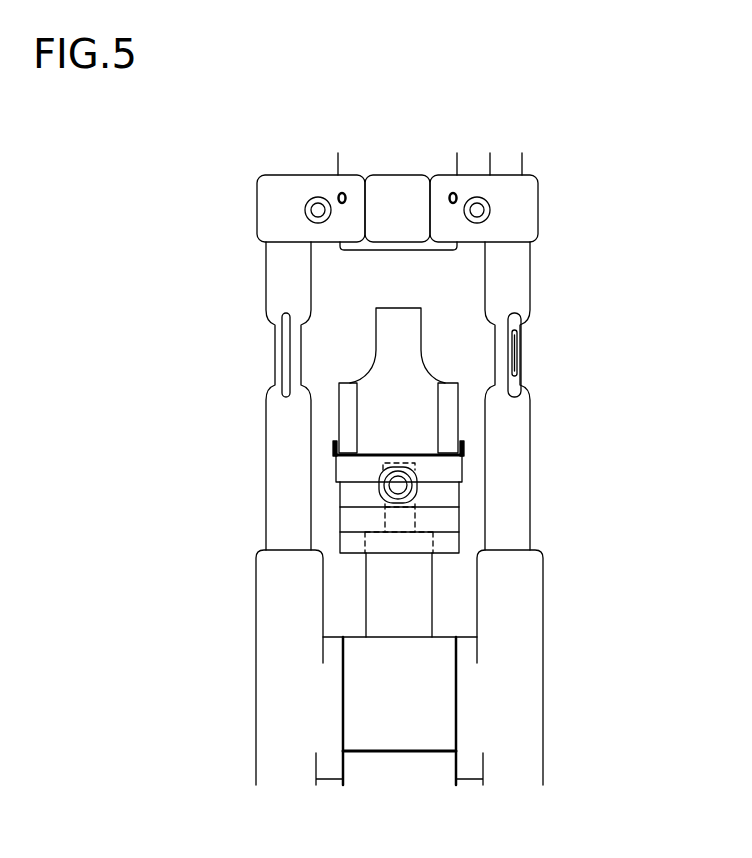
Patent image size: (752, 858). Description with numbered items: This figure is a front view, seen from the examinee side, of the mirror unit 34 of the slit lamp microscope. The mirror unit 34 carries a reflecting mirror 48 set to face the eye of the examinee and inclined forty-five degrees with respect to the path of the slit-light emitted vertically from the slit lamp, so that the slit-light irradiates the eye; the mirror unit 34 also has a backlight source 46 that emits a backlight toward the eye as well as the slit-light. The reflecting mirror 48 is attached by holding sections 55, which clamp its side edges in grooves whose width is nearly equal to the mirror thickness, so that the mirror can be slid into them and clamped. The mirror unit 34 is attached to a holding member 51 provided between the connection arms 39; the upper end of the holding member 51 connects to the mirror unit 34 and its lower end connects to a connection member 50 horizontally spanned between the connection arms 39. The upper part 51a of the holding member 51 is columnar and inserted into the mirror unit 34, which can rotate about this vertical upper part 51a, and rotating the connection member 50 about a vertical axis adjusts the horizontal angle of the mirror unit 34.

The mirror unit 34 is at (353, 343).
The connection arms 39 is at (292, 465).
The backlight source 46 is at (378, 490).
The reflecting mirror 48 is at (410, 380).
The connection member 50 is at (415, 698).
The holding member 51 is at (413, 605).
The upper part of the holding member 51a is at (413, 518).
The holding sections 55 is at (343, 427).